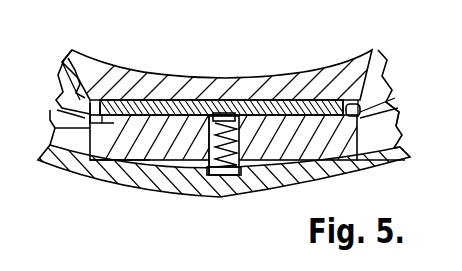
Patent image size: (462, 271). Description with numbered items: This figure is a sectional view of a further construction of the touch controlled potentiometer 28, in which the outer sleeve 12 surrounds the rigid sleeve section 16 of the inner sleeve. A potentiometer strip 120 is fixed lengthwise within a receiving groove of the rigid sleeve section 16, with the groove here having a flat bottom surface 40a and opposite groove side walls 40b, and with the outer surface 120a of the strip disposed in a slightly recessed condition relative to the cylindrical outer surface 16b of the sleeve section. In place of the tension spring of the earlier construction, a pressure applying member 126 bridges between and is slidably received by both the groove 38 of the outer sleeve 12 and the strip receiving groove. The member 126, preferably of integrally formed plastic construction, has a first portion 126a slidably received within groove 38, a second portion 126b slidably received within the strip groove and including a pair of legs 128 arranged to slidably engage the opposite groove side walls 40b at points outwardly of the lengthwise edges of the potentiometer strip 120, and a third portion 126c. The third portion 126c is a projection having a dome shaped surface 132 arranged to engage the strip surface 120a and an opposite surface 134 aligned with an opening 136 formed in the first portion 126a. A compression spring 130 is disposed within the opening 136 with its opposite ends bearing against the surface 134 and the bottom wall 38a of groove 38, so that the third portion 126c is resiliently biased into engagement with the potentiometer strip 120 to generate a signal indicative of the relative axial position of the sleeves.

The outer sleeve 12 is at (70, 176).
The rigid sleeve section 16 is at (57, 98).
The cylindrical outer surface 16b is at (400, 110).
The touch controlled potentiometer 28 is at (255, 83).
The groove 38 is at (392, 112).
The bottom wall 38a is at (383, 168).
The bottom surface 40a is at (127, 100).
The groove side walls 40b is at (52, 126).
The potentiometer strip 120 is at (163, 108).
The outer surface 120a is at (296, 100).
The pressure applying member 126 is at (148, 165).
The first portion 126a is at (147, 158).
The second portion 126b is at (70, 92).
The third portion 126c is at (205, 118).
The legs 128 is at (97, 100).
The compression spring 130 is at (228, 175).
The dome shaped surface 132 is at (193, 128).
The opposite surface 134 is at (233, 114).
The opening 136 is at (239, 175).